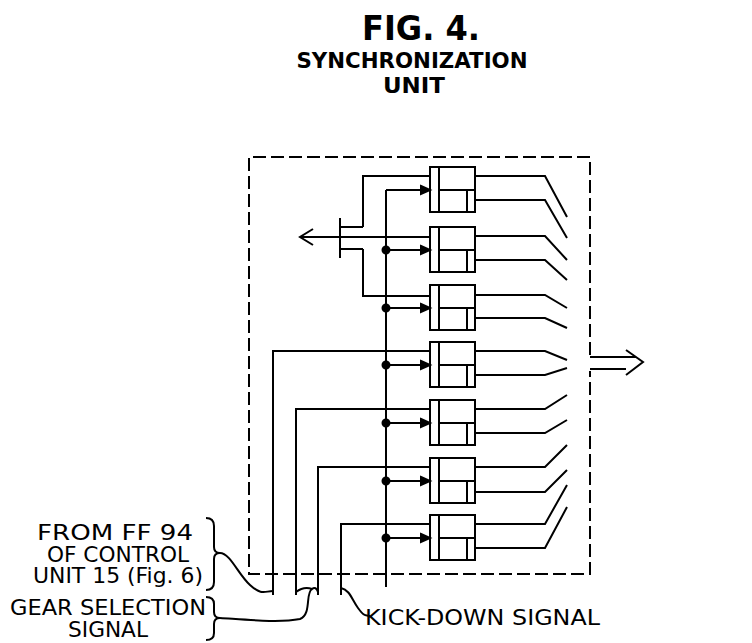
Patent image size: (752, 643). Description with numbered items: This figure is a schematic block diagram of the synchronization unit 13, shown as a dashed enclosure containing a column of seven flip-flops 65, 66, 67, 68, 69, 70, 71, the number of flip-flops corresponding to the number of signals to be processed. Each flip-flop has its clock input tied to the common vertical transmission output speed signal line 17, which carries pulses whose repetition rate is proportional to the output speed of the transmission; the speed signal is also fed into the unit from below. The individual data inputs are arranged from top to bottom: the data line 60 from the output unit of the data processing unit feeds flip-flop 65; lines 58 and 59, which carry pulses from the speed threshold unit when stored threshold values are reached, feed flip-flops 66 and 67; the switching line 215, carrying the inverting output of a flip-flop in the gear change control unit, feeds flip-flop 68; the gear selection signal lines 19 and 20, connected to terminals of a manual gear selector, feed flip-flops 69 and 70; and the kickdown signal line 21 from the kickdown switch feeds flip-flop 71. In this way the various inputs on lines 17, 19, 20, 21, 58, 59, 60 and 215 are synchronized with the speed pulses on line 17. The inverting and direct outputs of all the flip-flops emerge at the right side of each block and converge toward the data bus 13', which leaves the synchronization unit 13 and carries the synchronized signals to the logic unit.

The synchronization unit 13 is at (456, 365).
The data bus 13' is at (628, 376).
The transmission output speed signal line 17 is at (386, 587).
The gear selection signal line 19 is at (347, 409).
The gear selection signal line 20 is at (364, 467).
The kickdown signal line 21 is at (370, 524).
The switching line 215 is at (348, 351).
The speed threshold pulse line 58 is at (350, 226).
The speed threshold pulse line 59 is at (363, 268).
The data line 60 is at (363, 194).
The flip-flop 65 is at (437, 207).
The flip-flop 66 is at (437, 267).
The flip-flop 67 is at (437, 325).
The flip-flop 68 is at (437, 382).
The flip-flop 69 is at (437, 440).
The flip-flop 70 is at (437, 498).
The flip-flop 71 is at (437, 555).